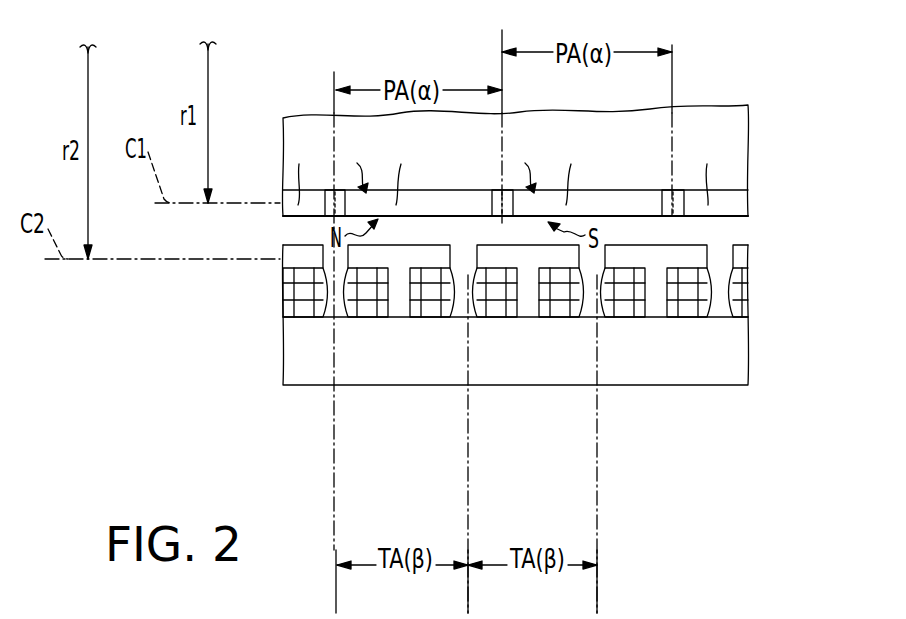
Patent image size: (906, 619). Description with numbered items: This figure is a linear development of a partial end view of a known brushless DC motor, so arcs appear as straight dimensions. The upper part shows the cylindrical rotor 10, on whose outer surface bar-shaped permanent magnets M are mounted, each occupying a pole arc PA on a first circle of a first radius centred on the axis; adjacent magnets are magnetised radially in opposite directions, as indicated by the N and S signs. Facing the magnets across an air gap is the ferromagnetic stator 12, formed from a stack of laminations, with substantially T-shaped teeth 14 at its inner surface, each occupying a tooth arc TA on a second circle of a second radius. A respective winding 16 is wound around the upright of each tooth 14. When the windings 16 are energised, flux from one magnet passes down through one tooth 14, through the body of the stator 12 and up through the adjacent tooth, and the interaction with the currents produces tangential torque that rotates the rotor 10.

The rotor 10 is at (740, 127).
The stator 12 is at (733, 361).
The teeth 14 is at (283, 260).
The winding 16 is at (283, 300).